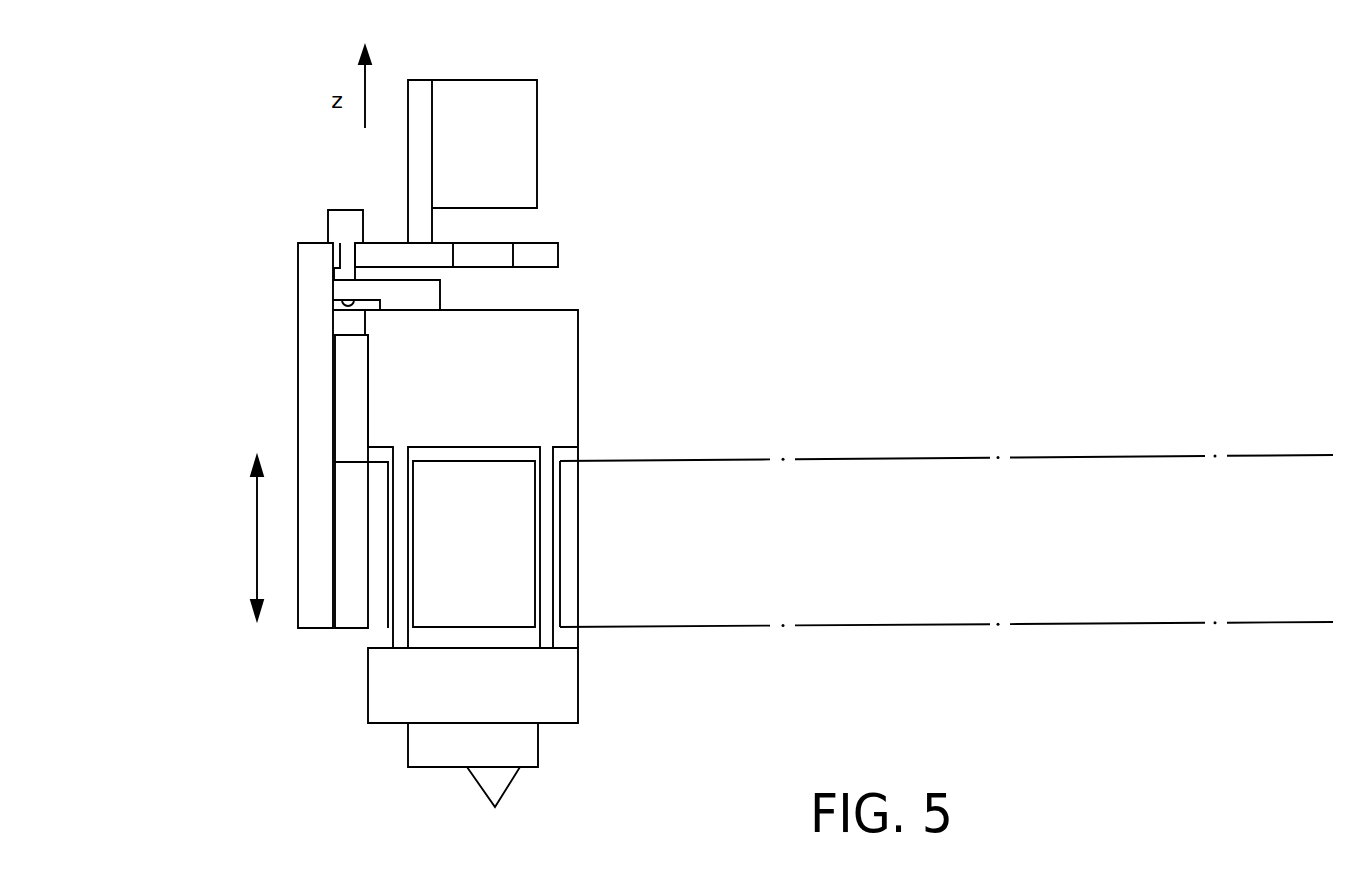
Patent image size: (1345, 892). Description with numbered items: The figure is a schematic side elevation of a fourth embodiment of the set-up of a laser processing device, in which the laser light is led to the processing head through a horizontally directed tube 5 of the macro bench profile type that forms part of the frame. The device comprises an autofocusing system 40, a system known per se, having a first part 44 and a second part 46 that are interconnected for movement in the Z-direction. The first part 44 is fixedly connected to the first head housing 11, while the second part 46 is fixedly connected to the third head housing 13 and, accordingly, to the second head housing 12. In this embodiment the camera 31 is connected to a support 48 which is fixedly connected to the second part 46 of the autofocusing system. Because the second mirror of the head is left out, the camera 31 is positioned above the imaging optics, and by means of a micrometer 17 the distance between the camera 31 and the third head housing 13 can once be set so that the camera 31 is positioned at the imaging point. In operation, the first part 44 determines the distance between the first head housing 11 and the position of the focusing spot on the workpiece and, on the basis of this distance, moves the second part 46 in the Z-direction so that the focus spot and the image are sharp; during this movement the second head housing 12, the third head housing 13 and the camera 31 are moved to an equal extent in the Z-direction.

The tube 5 is at (861, 561).
The first head housing 11 is at (448, 549).
The second head housing 12 is at (428, 702).
The third head housing 13 is at (434, 381).
The micrometer 17 is at (342, 210).
The camera 31 is at (461, 154).
The autofocusing system 40 is at (298, 312).
The first part 44 is at (357, 627).
The second part 46 is at (315, 627).
The support 48 is at (418, 95).